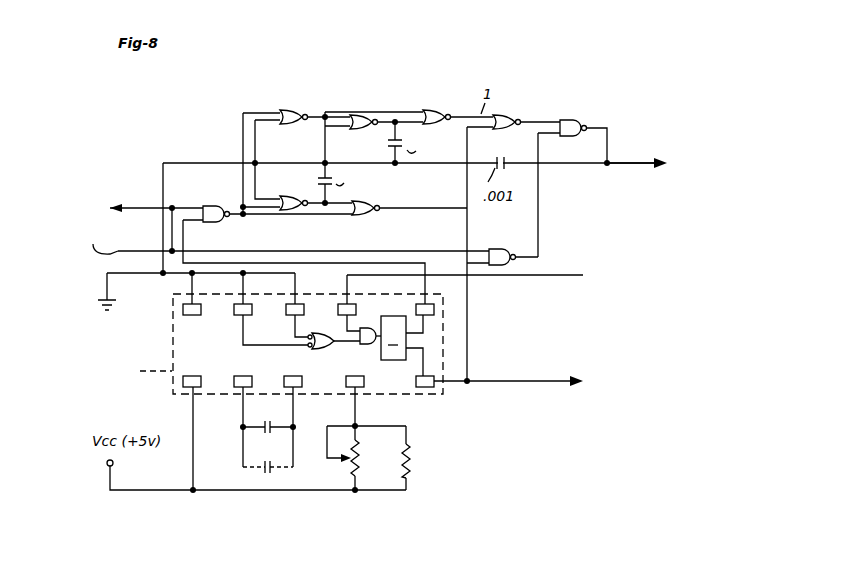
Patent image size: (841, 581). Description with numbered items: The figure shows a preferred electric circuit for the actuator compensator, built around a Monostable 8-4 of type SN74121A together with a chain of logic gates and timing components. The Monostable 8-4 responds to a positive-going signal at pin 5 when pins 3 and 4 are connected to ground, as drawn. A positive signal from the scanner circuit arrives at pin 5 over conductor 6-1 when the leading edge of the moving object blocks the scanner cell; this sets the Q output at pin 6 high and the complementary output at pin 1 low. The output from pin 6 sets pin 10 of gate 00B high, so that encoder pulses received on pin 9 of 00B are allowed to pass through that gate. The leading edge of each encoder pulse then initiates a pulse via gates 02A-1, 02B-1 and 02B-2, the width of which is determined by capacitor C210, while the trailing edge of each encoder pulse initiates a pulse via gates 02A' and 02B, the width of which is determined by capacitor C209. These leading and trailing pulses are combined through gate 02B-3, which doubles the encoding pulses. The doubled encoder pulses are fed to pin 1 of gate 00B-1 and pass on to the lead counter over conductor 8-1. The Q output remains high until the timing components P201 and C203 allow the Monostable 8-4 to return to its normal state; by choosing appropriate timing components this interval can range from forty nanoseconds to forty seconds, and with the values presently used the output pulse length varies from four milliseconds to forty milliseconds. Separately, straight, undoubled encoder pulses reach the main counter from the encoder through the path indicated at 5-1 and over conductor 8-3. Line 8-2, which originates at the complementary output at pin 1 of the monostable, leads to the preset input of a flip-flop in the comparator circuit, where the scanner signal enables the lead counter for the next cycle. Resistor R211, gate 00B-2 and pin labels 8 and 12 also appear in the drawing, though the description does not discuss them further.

The conductor 8-1 is at (632, 168).
The line 8-2 is at (514, 382).
The conductor 8-3 is at (124, 206).
The monostable 8-4 is at (460, 344).
The circuit 5-1 is at (150, 252).
The conductor 6-1 is at (516, 280).
The gate 00B is at (213, 206).
The gate 00B-1 is at (577, 120).
The NAND gate 00B-2 is at (503, 238).
The gate 02A-1 is at (287, 110).
The gate 02A' is at (310, 191).
The gate 02B is at (372, 203).
The gate 02B-1 is at (357, 130).
The gate 02B-2 is at (431, 108).
The gate 02B-3 is at (504, 114).
The capacitor C209 is at (319, 176).
The capacitor C210 is at (400, 148).
The timing capacitor C203 is at (262, 431).
The timing potentiometer P201 is at (352, 466).
The resistor R211 is at (409, 452).
The pin 1 is at (423, 388).
The pin 3 is at (250, 311).
The pin 4 is at (300, 311).
The pin 5 is at (357, 310).
The pin 6 is at (434, 309).
The pin 8 is at (232, 230).
The pin 9 is at (192, 207).
The pin 10 is at (196, 222).
The pin 12 is at (545, 117).